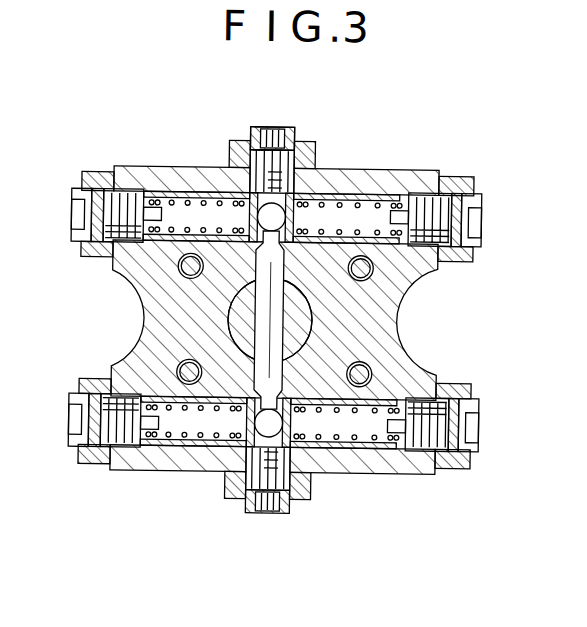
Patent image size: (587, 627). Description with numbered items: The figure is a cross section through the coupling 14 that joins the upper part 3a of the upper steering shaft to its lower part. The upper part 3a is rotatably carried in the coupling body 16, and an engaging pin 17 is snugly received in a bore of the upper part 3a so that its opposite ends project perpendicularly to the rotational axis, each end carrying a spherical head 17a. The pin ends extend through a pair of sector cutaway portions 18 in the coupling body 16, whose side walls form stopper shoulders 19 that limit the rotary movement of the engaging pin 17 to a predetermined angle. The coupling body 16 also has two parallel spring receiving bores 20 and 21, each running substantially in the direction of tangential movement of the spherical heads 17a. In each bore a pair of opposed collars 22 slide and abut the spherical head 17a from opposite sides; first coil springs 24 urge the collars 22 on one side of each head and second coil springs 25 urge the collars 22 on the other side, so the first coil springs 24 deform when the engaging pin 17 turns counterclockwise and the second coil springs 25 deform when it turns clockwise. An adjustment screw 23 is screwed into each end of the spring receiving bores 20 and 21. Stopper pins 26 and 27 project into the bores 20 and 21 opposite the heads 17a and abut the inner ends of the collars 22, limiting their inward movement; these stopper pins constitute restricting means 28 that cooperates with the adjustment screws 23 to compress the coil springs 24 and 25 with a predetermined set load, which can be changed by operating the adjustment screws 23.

The upper part of the upper steering shaft 3a is at (402, 346).
The coupling 14 is at (277, 140).
The coupling body 16 is at (330, 166).
The engaging pin 17 is at (312, 320).
The spherical heads 17a is at (308, 141).
The sector cutaway portions 18 is at (372, 273).
The stopper shoulders 19 is at (236, 236).
The spring receiving bore 20 is at (364, 220).
The spring receiving bore 21 is at (327, 430).
The collars 22 is at (192, 193).
The adjustment screw 23 is at (70, 208).
The first coil springs 24 is at (166, 192).
The second coil springs 25 is at (395, 176).
The stopper pin 26 is at (271, 127).
The stopper pin 27 is at (294, 502).
The restricting means 28 is at (249, 121).